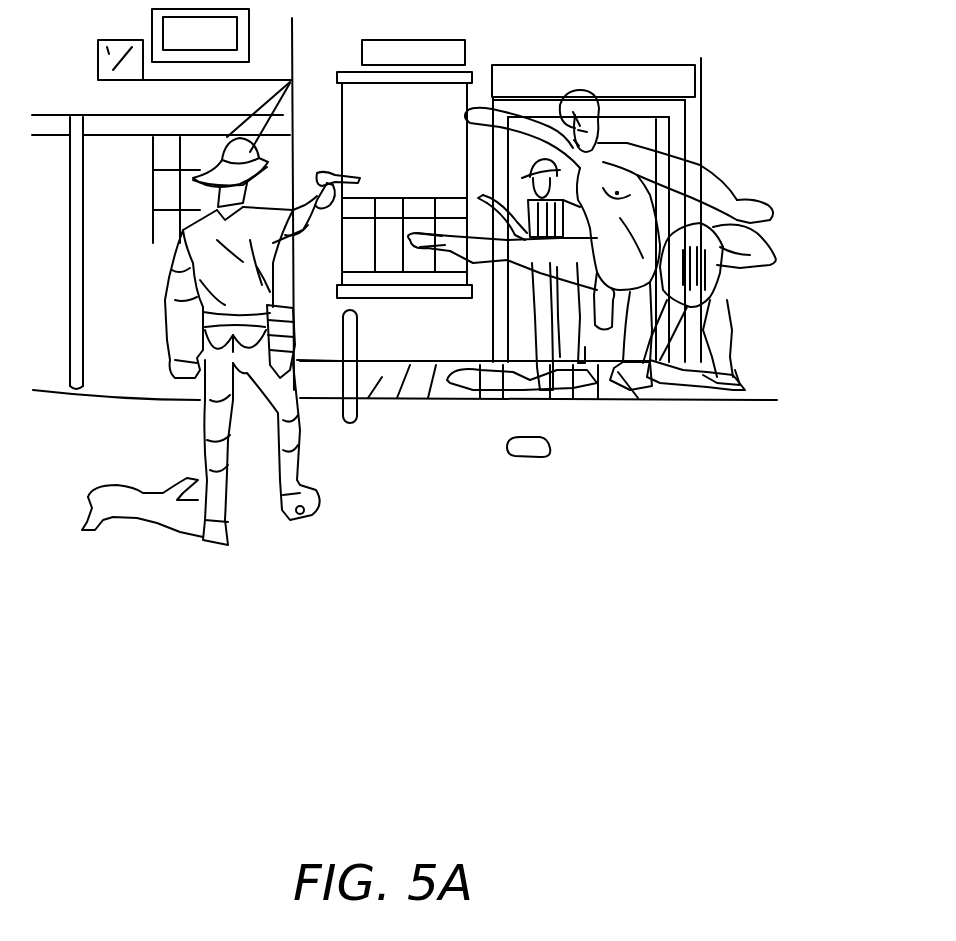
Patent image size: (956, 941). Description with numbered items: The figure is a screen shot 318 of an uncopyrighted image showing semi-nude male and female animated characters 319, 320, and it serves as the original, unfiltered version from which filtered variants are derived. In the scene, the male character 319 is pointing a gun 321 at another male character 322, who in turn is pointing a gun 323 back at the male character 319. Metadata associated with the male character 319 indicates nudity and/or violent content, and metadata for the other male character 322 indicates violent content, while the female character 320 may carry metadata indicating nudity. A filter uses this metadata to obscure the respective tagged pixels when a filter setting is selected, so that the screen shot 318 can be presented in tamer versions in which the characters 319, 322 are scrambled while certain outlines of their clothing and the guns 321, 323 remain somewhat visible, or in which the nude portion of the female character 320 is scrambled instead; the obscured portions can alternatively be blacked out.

The screen shot 318 is at (366, 273).
The male character 319 is at (312, 476).
The female character 320 is at (733, 187).
The gun 321 is at (357, 172).
The male character 322 is at (628, 377).
The gun 323 is at (483, 195).